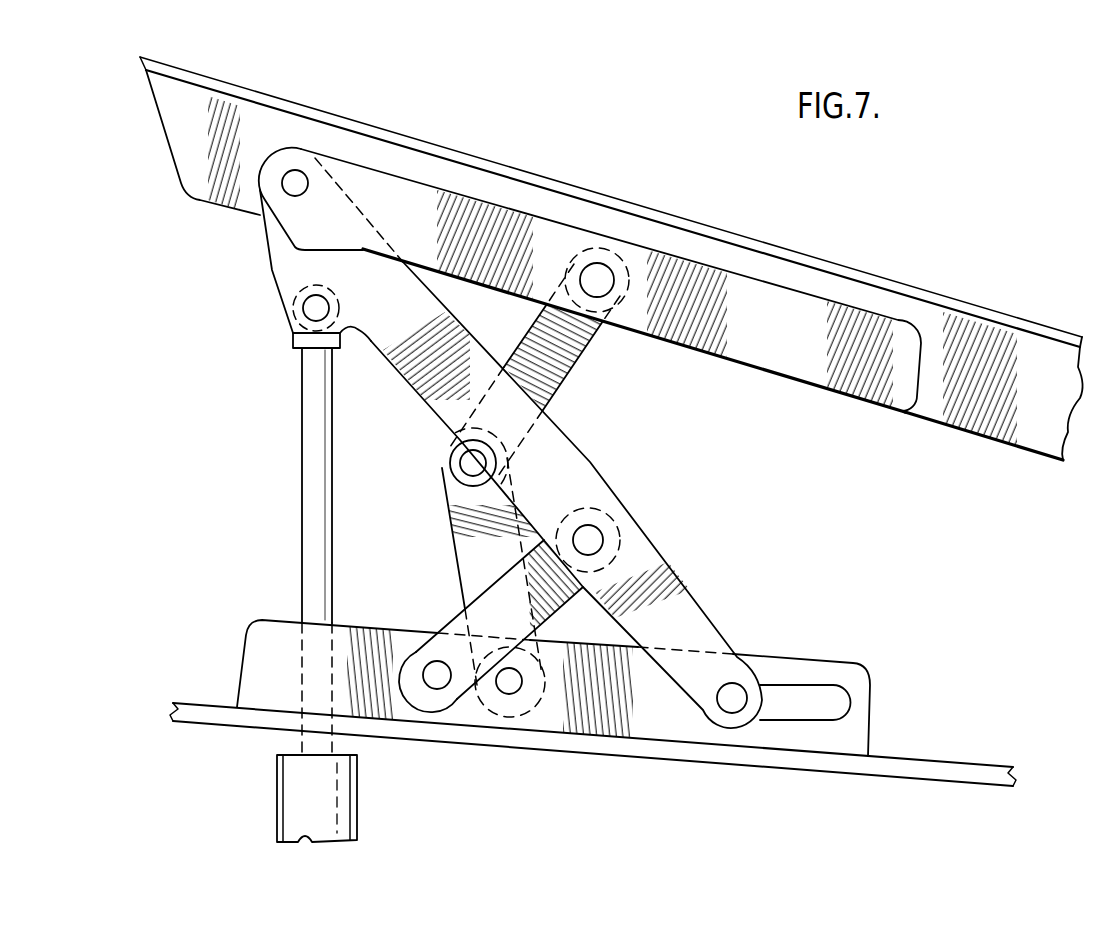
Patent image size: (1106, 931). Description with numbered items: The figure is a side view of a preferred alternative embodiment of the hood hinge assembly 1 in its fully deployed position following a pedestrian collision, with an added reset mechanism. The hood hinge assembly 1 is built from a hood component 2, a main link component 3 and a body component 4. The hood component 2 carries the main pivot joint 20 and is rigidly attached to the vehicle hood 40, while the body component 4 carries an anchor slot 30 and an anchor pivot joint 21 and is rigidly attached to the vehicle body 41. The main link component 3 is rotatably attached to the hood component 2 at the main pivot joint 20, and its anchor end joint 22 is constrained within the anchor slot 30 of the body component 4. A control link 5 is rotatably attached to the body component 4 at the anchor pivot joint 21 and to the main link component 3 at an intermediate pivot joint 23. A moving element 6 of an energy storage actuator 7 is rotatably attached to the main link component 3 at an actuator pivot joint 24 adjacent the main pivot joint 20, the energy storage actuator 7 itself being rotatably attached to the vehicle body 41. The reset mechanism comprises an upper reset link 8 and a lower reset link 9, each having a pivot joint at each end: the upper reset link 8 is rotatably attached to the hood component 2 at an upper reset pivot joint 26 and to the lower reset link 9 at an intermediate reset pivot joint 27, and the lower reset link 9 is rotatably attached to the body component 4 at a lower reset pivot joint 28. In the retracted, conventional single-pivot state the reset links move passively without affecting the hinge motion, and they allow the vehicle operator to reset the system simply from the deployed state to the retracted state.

The hood hinge assembly 1 is at (900, 549).
The hood component 2 is at (756, 346).
The main link component 3 is at (573, 473).
The body component 4 is at (251, 630).
The control link 5 is at (456, 621).
The moving element 6 is at (306, 416).
The energy storage actuator 7 is at (292, 787).
The upper reset link 8 is at (556, 364).
The lower reset link 9 is at (460, 532).
The main pivot joint 20 is at (288, 183).
The anchor pivot joint 21 is at (436, 668).
The anchor end joint 22 is at (737, 694).
The intermediate pivot joint 23 is at (591, 530).
The actuator pivot joint 24 is at (312, 308).
The upper reset pivot joint 26 is at (590, 297).
The intermediate reset pivot joint 27 is at (463, 463).
The lower reset pivot joint 28 is at (510, 684).
The anchor slot 30 is at (821, 684).
The vehicle hood 40 is at (903, 287).
The vehicle body 41 is at (950, 768).